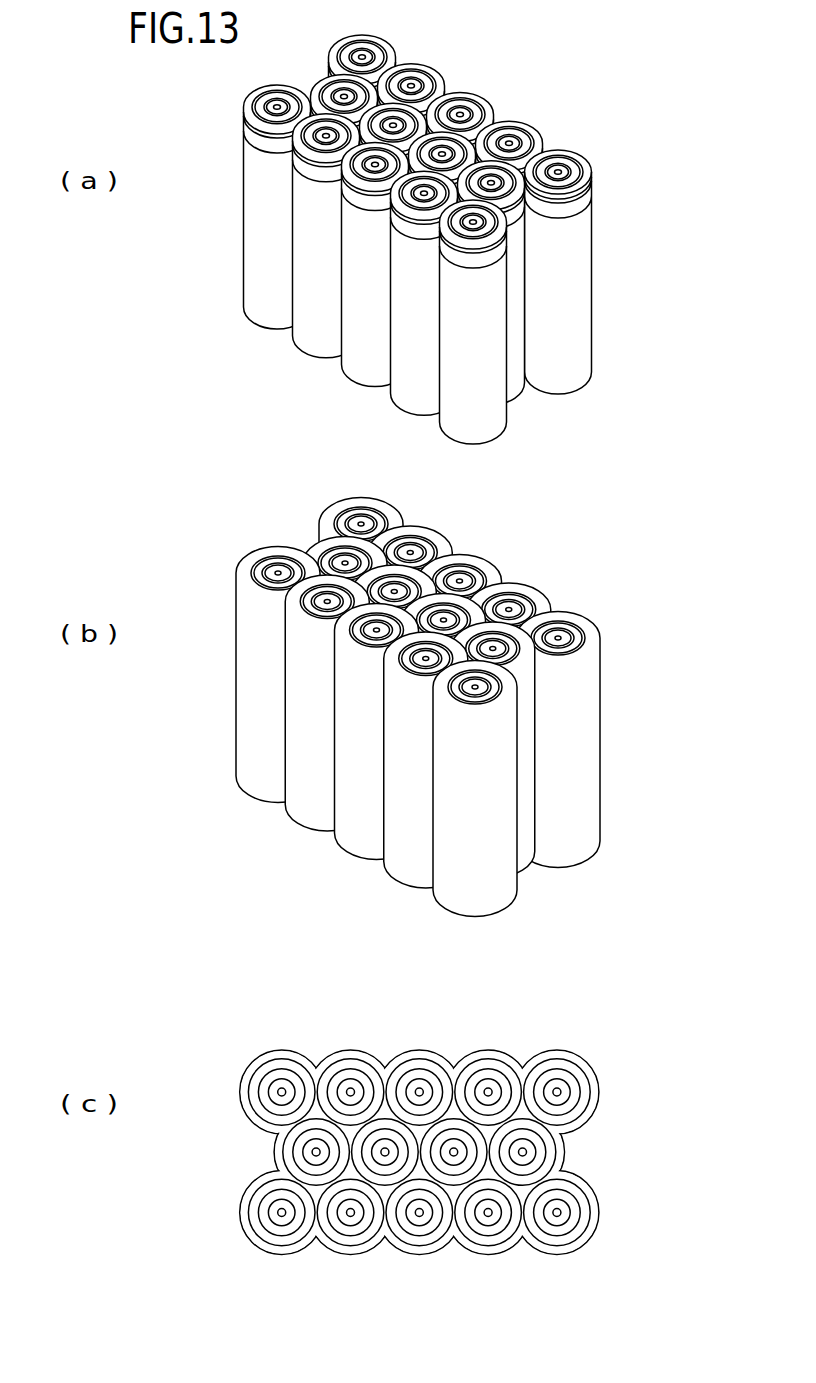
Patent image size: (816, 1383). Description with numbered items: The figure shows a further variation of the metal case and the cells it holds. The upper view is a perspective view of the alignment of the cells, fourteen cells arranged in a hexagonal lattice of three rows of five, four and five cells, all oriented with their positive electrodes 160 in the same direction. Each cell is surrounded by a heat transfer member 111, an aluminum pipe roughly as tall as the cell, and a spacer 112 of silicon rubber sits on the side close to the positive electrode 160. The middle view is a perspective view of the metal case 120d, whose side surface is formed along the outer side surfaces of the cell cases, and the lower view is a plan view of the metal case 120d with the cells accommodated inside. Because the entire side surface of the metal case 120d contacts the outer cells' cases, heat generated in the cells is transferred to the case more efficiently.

The heat transfer member 111 is at (603, 285).
The spacer 112 is at (585, 164).
The positive electrode 160 is at (558, 169).
The metal case 120d is at (492, 707).